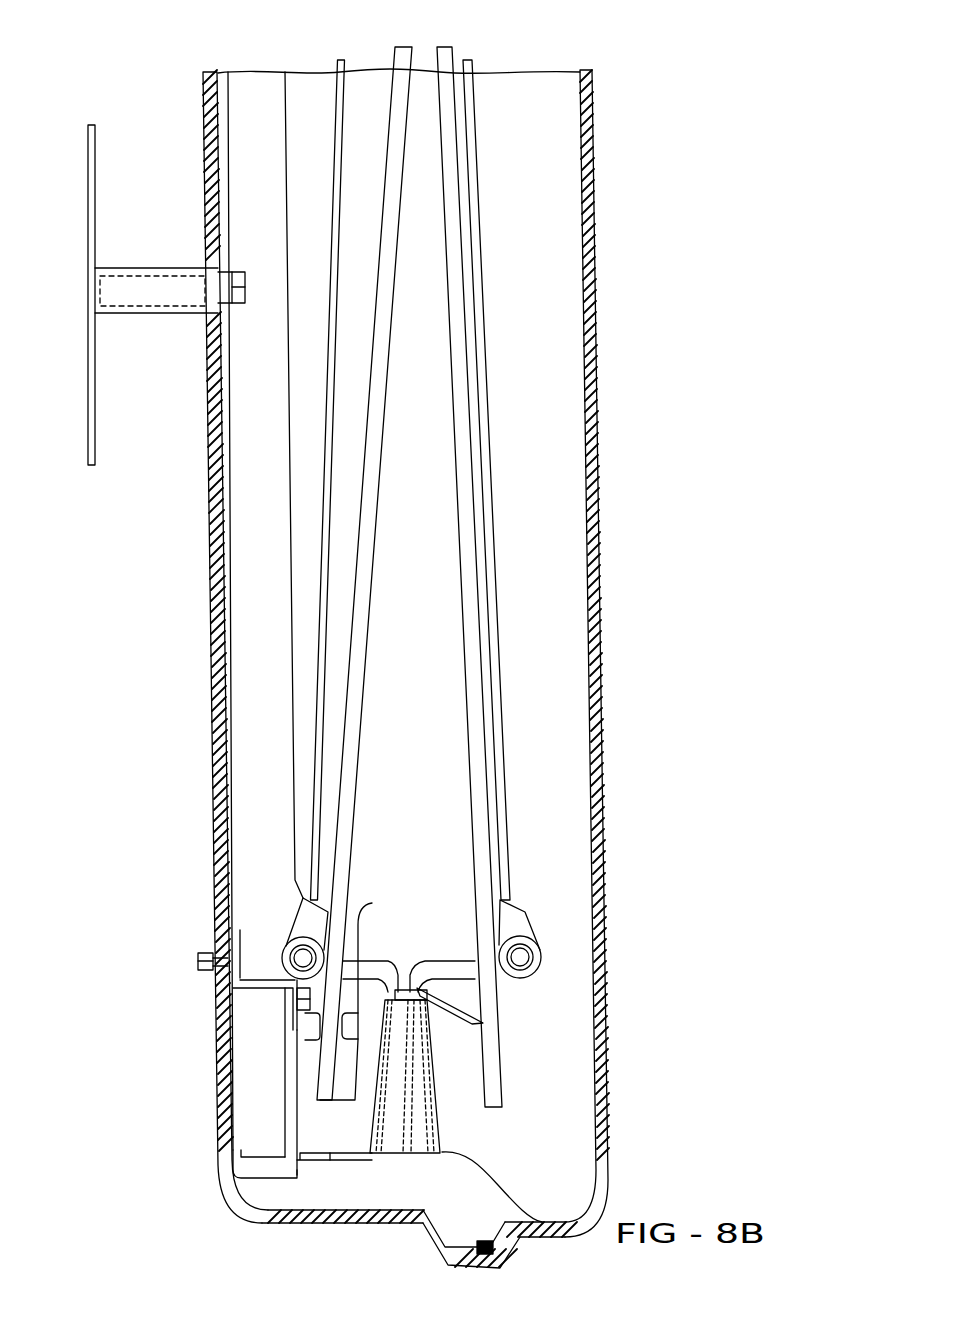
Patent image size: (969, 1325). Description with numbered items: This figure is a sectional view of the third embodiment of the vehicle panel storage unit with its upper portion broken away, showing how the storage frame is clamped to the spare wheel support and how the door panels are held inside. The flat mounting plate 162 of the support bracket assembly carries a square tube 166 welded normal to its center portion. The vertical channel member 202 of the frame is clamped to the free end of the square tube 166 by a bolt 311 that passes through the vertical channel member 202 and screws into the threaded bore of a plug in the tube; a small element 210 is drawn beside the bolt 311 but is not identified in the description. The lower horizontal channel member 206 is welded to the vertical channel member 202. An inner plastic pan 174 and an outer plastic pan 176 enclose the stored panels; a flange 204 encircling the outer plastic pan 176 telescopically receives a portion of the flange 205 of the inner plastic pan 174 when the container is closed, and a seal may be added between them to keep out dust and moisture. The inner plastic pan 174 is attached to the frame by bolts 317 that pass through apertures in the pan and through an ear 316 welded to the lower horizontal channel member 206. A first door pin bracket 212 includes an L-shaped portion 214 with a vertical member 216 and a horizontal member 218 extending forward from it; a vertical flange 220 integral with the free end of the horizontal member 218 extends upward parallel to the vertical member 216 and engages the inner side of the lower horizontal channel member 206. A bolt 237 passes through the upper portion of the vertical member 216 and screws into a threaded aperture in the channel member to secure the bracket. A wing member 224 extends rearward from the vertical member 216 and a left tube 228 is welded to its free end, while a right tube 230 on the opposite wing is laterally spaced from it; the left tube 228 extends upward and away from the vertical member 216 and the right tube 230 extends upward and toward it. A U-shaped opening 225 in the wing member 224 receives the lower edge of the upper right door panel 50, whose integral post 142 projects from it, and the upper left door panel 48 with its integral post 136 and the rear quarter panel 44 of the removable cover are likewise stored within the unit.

The rear quarter panel 44 is at (328, 472).
The upper left door panel 48 is at (455, 55).
The upper right door panel 50 is at (392, 60).
The integral post 136 is at (487, 1022).
The integral post 142 is at (398, 988).
The mounting plate 162 is at (88, 197).
The square tube 166 is at (171, 315).
The inner plastic pan 174 is at (213, 745).
The outer plastic pan 176 is at (605, 745).
The vertical channel member 202 is at (250, 85).
The flange 204 is at (482, 1262).
The flange 205 is at (467, 1240).
The lower horizontal channel member 206 is at (285, 1050).
The nut 210 is at (242, 270).
The first door pin bracket 212 is at (335, 1160).
The L-shaped portion 214 is at (332, 1155).
The vertical member 216 is at (300, 1005).
The horizontal member 218 is at (263, 1178).
The vertical flange 220 is at (237, 1148).
The wing member 224 is at (303, 1096).
The U-shaped opening 225 is at (397, 996).
The left tube 228 is at (385, 1163).
The right tube 230 is at (520, 1242).
The bolt 237 is at (296, 993).
The bolt 311 is at (186, 215).
The ear 316 is at (238, 932).
The bolt 317 is at (200, 962).